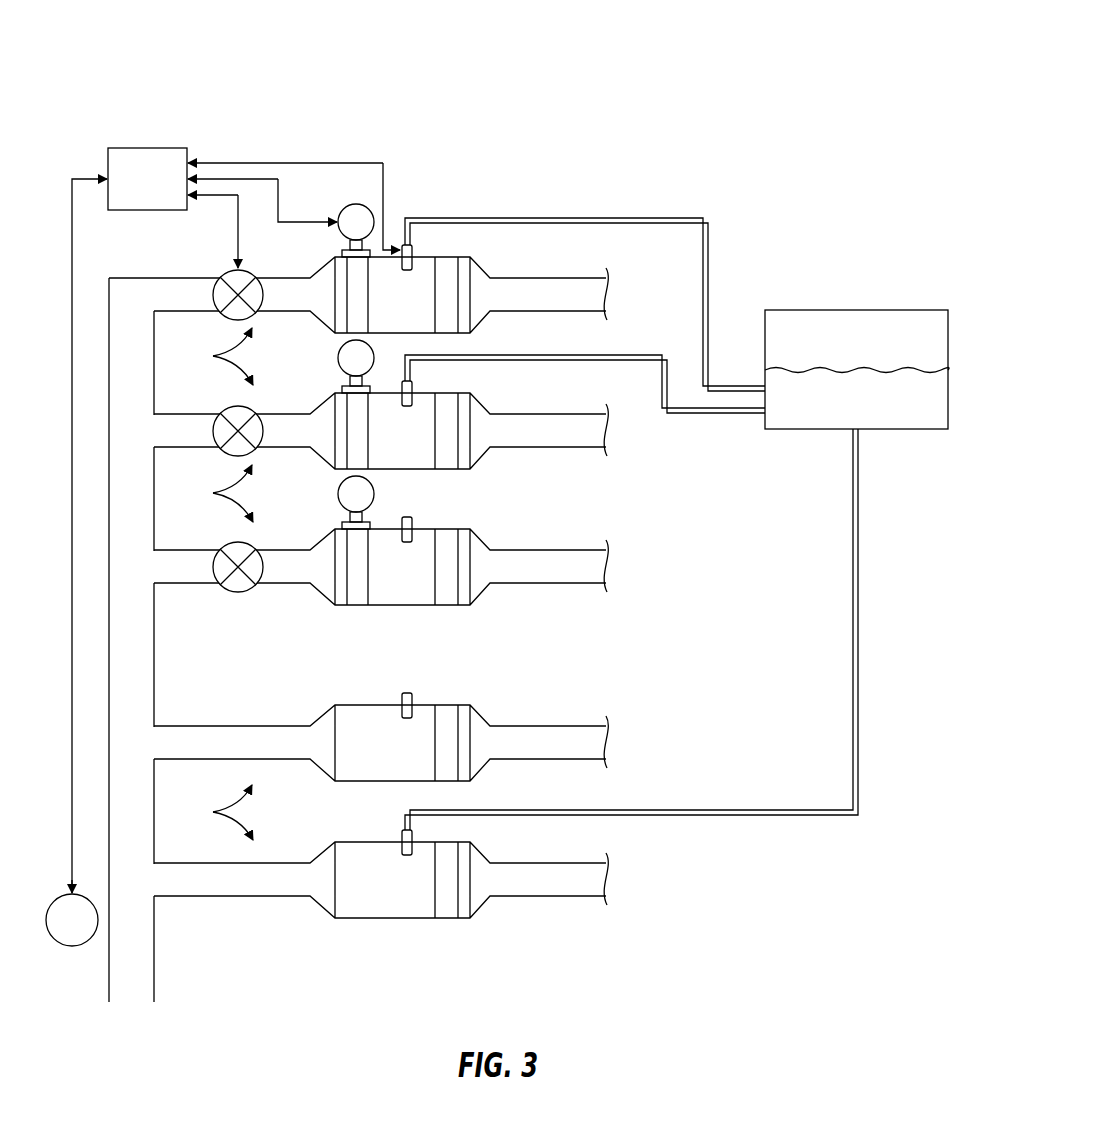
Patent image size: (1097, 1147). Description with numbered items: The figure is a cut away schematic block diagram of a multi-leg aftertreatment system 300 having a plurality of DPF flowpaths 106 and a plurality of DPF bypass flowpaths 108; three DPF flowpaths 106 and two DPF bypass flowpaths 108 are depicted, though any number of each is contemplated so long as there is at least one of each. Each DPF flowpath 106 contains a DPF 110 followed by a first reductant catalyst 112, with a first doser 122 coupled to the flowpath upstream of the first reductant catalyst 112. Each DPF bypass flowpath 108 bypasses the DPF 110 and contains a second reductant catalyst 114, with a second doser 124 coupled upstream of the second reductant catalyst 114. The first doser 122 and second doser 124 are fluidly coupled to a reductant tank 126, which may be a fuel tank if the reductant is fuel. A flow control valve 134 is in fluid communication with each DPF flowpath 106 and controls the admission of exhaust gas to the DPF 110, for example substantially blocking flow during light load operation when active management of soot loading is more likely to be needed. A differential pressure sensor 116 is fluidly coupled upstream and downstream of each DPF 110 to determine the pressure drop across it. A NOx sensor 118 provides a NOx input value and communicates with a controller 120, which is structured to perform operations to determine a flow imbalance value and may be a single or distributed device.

The system 300 is at (766, 44).
The DPF flowpath 106 is at (213, 356).
The DPF bypass flowpath 108 is at (213, 812).
The DPF 110 is at (355, 309).
The first reductant catalyst 112 is at (450, 297).
The second reductant catalyst 114 is at (450, 745).
The differential pressure sensor 116 is at (345, 207).
The NOx sensor 118 is at (72, 946).
The controller 120 is at (150, 150).
The first doser 122 is at (413, 250).
The second doser 124 is at (413, 700).
The reductant tank 126 is at (857, 310).
The flow control valve 134 is at (232, 272).